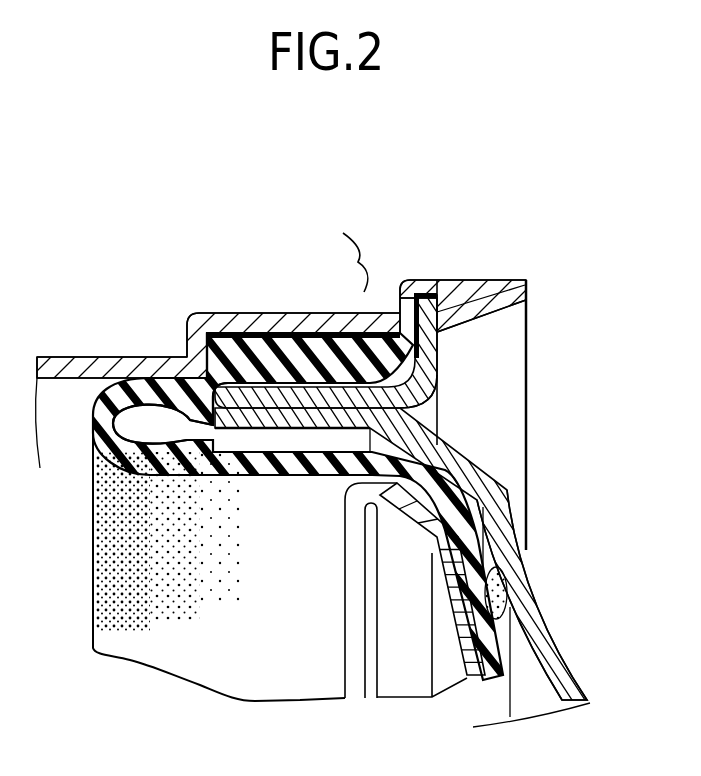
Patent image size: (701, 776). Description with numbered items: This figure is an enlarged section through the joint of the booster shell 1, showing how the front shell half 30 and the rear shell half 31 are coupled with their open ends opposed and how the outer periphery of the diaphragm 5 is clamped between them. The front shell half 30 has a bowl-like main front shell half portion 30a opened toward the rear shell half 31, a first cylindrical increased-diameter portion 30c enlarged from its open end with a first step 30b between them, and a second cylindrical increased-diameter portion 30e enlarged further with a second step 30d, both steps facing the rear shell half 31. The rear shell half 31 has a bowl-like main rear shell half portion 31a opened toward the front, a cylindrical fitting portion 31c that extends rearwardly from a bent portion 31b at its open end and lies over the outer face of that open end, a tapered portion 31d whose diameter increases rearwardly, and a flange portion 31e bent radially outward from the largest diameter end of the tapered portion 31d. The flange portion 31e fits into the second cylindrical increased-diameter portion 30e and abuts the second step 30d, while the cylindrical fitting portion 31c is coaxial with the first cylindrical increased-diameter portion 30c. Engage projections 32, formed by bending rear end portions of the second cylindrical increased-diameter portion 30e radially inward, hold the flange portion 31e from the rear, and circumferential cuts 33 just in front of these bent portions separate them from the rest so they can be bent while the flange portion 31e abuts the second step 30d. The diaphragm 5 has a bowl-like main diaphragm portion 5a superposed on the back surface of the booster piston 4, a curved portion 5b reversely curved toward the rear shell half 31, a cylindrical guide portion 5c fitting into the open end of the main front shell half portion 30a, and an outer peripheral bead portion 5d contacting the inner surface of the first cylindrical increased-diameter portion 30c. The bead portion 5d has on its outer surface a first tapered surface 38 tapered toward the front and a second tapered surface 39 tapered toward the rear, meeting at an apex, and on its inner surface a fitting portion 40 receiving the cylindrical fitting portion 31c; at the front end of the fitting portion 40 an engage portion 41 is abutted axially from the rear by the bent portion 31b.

The booster shell 1 is at (361, 262).
The cylindrical wall 4 is at (470, 650).
The diaphragm 5 is at (440, 483).
The main diaphragm portion 5a is at (413, 492).
The curved portion 5b is at (92, 432).
The cylindrical guide portion 5c is at (153, 380).
The outer peripheral bead portion 5d is at (285, 345).
The front shell half 30 is at (310, 313).
The main front shell half portion 30a is at (73, 357).
The first step 30b is at (193, 337).
The first cylindrical increased-diameter portion 30c is at (258, 312).
The second step 30d is at (385, 288).
The second cylindrical increased-diameter portion 30e is at (424, 288).
The rear shell half 31 is at (333, 345).
The main rear shell half portion 31a is at (515, 568).
The bent portion 31b is at (197, 445).
The cylindrical fitting portion 31c is at (300, 400).
The tapered portion 31d is at (410, 390).
The flange portion 31e is at (428, 347).
The engage projections 32 is at (497, 286).
The cuts 33 is at (447, 298).
The first tapered surface 38 is at (238, 345).
The second tapered surface 39 is at (430, 358).
The fitting portion 40 is at (227, 393).
The engage portion 41 is at (252, 412).